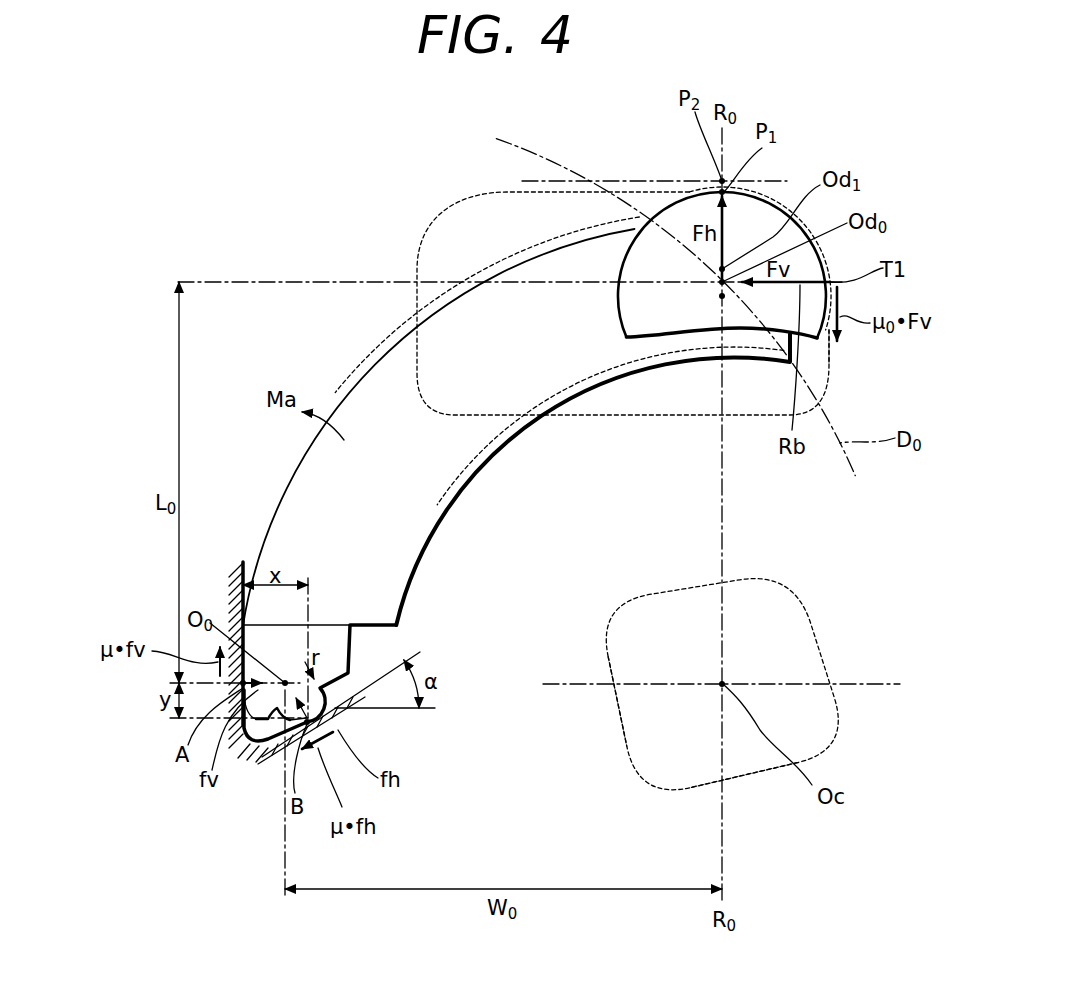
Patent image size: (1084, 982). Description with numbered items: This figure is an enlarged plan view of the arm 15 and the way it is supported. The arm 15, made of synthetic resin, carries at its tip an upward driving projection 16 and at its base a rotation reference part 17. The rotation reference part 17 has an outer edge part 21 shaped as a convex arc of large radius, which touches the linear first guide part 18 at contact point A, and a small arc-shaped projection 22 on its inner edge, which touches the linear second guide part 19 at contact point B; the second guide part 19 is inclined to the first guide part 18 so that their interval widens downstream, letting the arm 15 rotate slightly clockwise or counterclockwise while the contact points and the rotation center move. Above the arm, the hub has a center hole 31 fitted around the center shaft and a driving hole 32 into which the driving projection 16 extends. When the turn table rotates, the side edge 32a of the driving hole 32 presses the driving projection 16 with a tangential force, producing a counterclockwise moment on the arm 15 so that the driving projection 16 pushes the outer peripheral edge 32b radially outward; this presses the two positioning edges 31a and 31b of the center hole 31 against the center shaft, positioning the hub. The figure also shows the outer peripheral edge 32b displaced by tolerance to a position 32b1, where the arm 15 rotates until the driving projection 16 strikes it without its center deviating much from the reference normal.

The arm 15 is at (478, 480).
The driving projection 16 is at (670, 317).
The rotation reference part 17 is at (350, 630).
The first guide part 18 is at (244, 562).
The second guide part 19 is at (262, 740).
The outer edge part 21 is at (276, 632).
The projection 22 is at (357, 703).
The center hole 31 is at (820, 630).
The positioning edge 31a is at (620, 732).
The positioning edge 31b is at (748, 781).
The driving hole 32 is at (457, 202).
The side edge 32a is at (833, 362).
The outer peripheral edge 32b is at (646, 188).
The shifted position of outer peripheral edge 32b1 is at (603, 190).